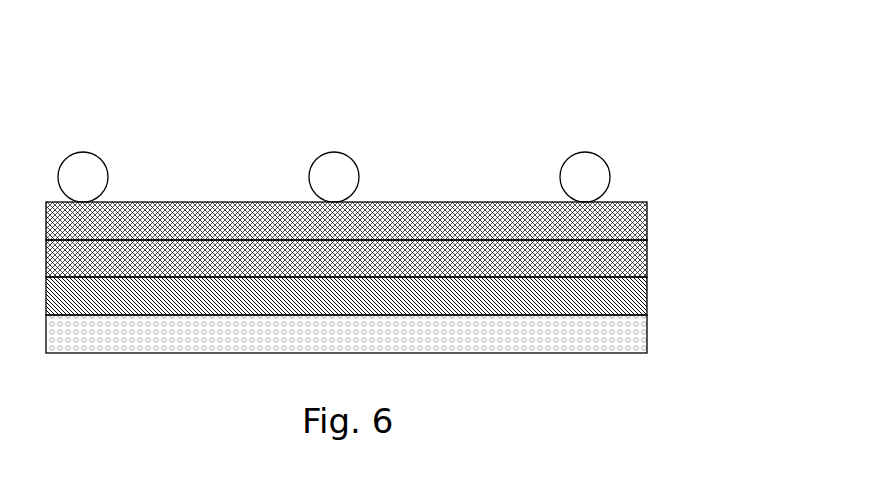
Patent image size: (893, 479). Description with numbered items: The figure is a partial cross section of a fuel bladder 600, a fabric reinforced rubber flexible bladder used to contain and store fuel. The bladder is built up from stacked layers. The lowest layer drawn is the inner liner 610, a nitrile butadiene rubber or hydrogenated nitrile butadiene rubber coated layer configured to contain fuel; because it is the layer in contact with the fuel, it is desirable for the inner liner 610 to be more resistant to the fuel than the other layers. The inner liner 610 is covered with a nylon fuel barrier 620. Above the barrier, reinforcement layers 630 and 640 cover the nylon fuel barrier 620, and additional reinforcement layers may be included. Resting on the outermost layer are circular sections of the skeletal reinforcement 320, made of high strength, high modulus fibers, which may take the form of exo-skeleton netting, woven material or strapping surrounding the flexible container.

The fuel bladder 600 is at (405, 198).
The inner liner 610 is at (647, 335).
The nylon fuel barrier 620 is at (647, 297).
The reinforcement layer 630 is at (647, 258).
The reinforcement layer 640 is at (647, 223).
The skeletal reinforcement 320 is at (359, 178).